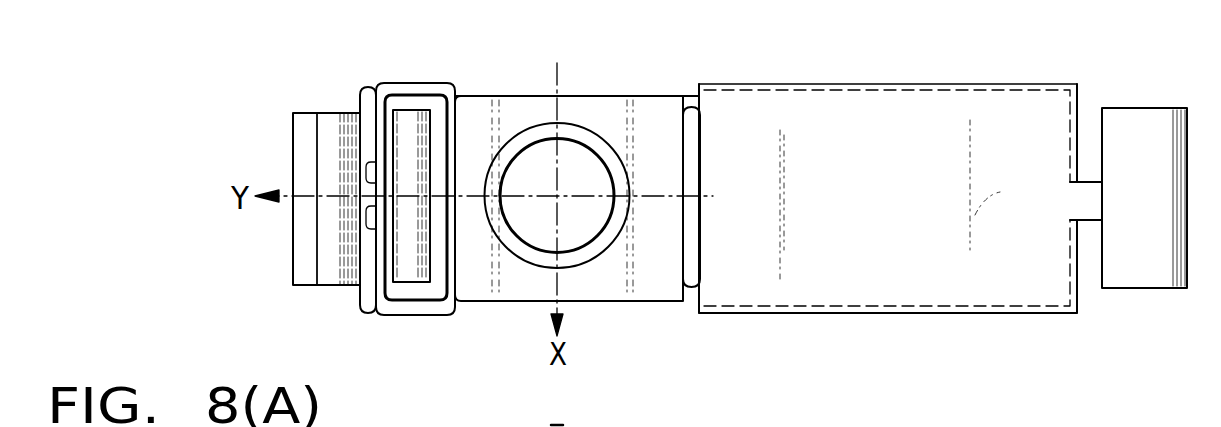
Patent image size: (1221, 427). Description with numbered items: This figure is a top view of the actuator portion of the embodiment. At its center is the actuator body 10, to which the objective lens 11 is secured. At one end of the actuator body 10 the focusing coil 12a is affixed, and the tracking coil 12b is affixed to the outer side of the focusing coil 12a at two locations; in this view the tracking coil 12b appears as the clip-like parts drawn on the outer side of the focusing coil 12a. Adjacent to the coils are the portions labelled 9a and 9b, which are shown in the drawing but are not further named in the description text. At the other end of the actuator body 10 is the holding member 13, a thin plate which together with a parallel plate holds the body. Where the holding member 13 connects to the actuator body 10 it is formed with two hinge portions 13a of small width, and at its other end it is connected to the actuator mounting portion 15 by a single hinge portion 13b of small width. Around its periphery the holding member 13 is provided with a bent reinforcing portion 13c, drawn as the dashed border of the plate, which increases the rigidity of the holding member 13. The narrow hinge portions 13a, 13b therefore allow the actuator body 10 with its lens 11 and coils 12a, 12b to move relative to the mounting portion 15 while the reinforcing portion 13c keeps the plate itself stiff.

The shaft portion 9a is at (335, 113).
The shaft end portion 9b is at (300, 117).
The actuator body 10 is at (662, 94).
The objective lens 11 is at (586, 150).
The focusing coil 12a is at (432, 85).
The tracking coil 12b is at (367, 88).
The holding member 13 is at (915, 100).
The hinge portion 13a is at (689, 96).
The hinge portion 13b is at (1085, 182).
The bent reinforcing portion 13c is at (1013, 84).
The actuator mounting portion 15 is at (1170, 120).